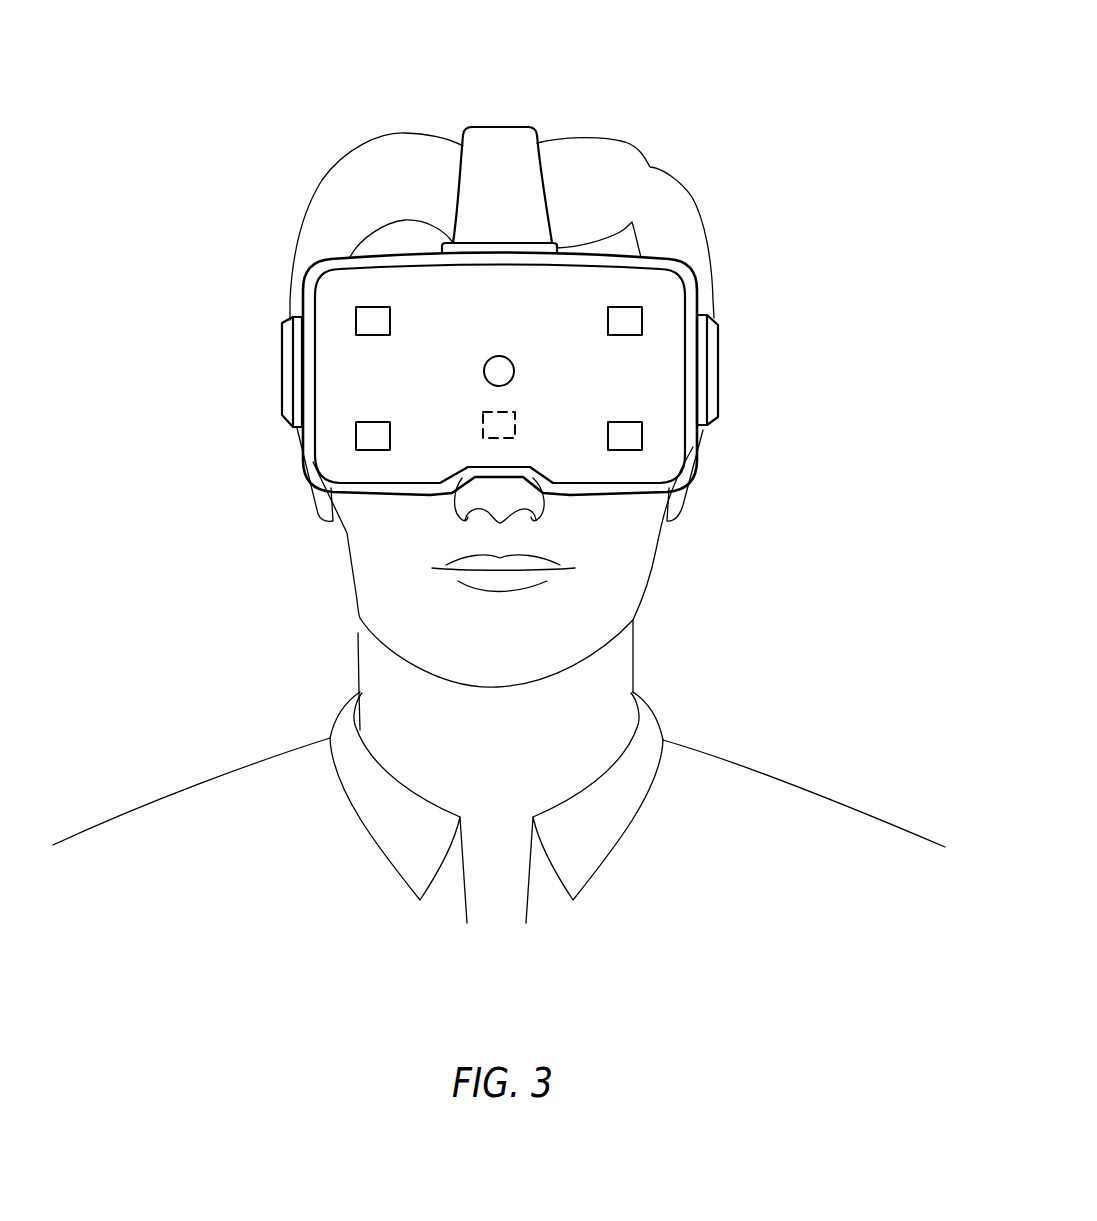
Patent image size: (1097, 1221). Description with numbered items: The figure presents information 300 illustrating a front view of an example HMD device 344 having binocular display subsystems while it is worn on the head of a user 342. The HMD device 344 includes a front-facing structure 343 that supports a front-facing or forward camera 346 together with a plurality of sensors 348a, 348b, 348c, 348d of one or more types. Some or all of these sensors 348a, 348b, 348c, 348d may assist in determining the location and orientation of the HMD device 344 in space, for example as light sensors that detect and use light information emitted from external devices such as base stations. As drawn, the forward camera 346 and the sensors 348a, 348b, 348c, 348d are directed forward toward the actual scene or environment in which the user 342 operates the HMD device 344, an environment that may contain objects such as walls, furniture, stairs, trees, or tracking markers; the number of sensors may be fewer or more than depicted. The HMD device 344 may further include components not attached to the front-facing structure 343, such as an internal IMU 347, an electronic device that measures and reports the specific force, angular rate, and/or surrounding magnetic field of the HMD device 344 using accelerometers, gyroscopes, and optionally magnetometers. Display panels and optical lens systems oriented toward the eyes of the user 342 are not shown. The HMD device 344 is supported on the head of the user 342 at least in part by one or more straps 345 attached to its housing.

The information 300 is at (772, 60).
The user 342 is at (763, 773).
The front-facing structure 343 is at (335, 436).
The HMD device 344 is at (623, 494).
The straps 345 is at (498, 125).
The forward camera 346 is at (495, 355).
The IMU 347 is at (516, 423).
The sensor 348a is at (392, 320).
The sensor 348b is at (373, 420).
The sensor 348c is at (607, 322).
The sensor 348d is at (623, 420).